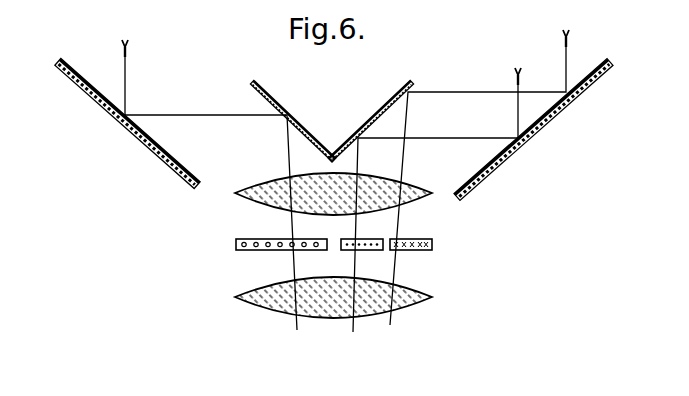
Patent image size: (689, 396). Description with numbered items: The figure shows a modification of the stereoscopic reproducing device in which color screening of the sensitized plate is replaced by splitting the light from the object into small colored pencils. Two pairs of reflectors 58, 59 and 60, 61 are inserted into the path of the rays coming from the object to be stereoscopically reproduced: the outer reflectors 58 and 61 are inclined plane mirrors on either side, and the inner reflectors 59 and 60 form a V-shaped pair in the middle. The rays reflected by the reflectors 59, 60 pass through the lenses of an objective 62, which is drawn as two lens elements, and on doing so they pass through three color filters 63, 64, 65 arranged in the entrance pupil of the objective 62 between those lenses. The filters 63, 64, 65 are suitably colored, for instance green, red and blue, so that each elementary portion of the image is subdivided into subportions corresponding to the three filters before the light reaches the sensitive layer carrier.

The reflector 58 is at (552, 126).
The reflector 59 is at (377, 108).
The reflector 60 is at (288, 109).
The reflector 61 is at (144, 142).
The objective 62 is at (257, 187).
The color filter 63 is at (267, 253).
The color filter 64 is at (370, 254).
The color filter 65 is at (422, 253).